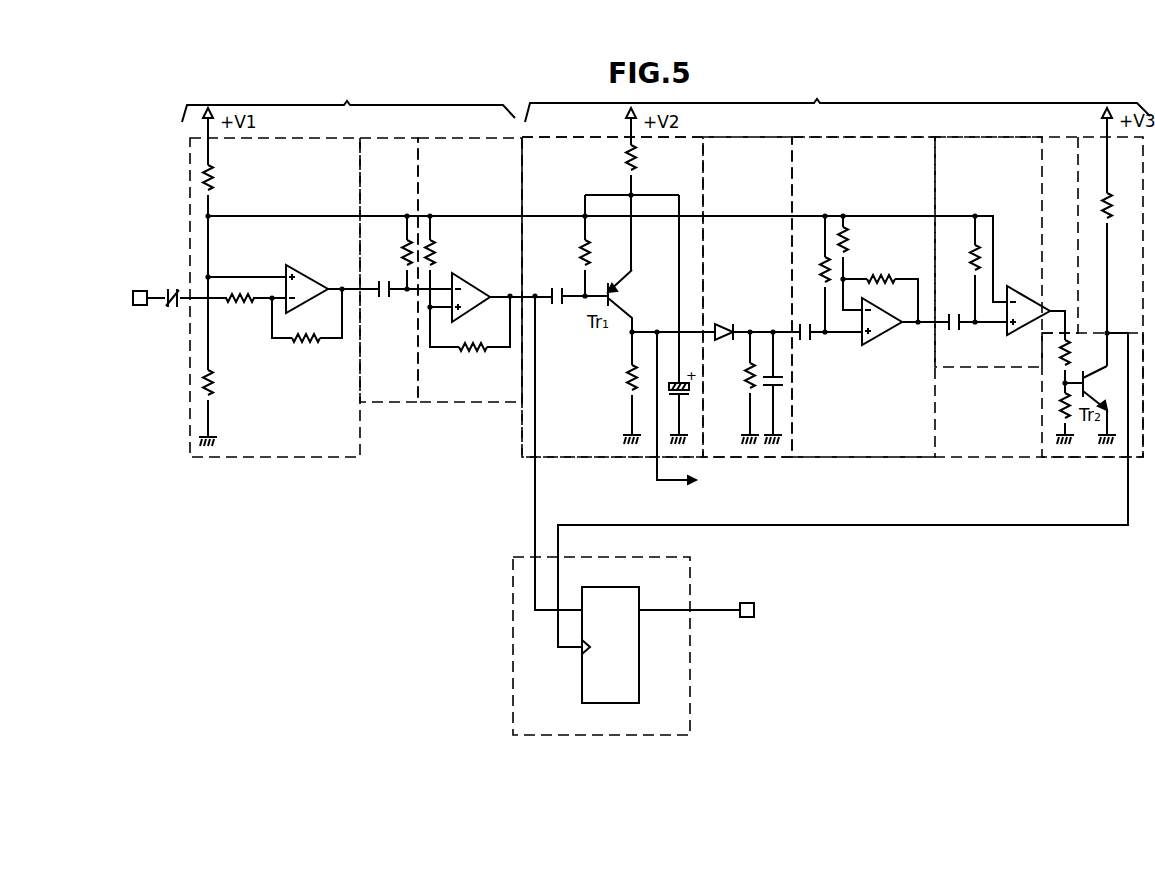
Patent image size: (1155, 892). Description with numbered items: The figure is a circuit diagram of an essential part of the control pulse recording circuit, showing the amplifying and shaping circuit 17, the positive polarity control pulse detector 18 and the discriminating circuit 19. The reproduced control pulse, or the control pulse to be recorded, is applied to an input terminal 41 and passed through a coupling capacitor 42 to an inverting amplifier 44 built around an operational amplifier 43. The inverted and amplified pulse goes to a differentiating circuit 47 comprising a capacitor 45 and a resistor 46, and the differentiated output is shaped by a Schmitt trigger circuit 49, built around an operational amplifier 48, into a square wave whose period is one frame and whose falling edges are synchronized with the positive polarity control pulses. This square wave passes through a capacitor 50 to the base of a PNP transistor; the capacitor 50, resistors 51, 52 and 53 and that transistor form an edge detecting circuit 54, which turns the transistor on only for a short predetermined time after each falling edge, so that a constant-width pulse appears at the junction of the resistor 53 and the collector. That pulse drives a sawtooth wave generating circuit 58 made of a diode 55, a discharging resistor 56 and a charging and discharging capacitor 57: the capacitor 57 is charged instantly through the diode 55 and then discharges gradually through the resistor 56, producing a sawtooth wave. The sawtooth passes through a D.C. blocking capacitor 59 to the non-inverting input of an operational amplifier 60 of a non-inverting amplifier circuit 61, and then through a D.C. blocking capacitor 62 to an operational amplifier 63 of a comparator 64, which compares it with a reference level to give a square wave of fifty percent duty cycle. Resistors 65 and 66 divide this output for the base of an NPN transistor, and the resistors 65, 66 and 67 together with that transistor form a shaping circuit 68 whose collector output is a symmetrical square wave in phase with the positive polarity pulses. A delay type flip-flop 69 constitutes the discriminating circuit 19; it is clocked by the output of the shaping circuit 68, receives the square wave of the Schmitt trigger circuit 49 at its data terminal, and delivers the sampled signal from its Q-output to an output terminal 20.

The amplifying and shaping circuit 17 is at (348, 101).
The positive polarity control pulse detector 18 is at (837, 99).
The discriminating circuit 19 is at (512, 584).
The output terminal 20 is at (747, 602).
The input terminal 41 is at (140, 290).
The coupling capacitor 42 is at (173, 289).
The operational amplifier 43 is at (292, 277).
The inverting amplifier 44 is at (290, 459).
The capacitor 45 is at (386, 299).
The resistor 46 is at (405, 259).
The differentiating circuit 47 is at (413, 405).
The operational amplifier 48 is at (456, 284).
The Schmitt trigger circuit 49 is at (448, 393).
The capacitor 50 is at (556, 289).
The resistor 51 is at (588, 256).
The resistor 52 is at (636, 164).
The resistor 53 is at (626, 379).
The edge detecting circuit 54 is at (620, 459).
The diode 55 is at (722, 323).
The discharging resistor 56 is at (746, 379).
The charging and discharging capacitor 57 is at (786, 381).
The sawtooth wave generating circuit 58 is at (702, 486).
The D.C. blocking capacitor 59 is at (806, 341).
The operational amplifier 60 is at (885, 339).
The non-inverting amplifier circuit 61 is at (826, 460).
The D.C. blocking capacitor 62 is at (954, 333).
The operational amplifier 63 is at (1016, 297).
The comparator 64 is at (1011, 369).
The resistor 65 is at (1070, 349).
The resistor 66 is at (1060, 414).
The resistor 67 is at (1112, 208).
The shaping circuit 68 is at (1040, 436).
The delay type flip-flop 69 is at (613, 587).